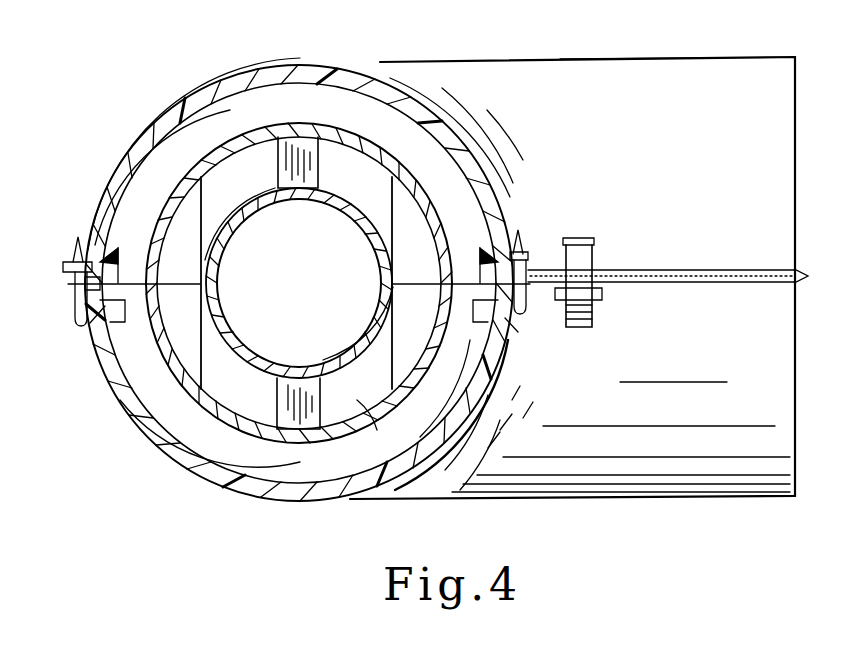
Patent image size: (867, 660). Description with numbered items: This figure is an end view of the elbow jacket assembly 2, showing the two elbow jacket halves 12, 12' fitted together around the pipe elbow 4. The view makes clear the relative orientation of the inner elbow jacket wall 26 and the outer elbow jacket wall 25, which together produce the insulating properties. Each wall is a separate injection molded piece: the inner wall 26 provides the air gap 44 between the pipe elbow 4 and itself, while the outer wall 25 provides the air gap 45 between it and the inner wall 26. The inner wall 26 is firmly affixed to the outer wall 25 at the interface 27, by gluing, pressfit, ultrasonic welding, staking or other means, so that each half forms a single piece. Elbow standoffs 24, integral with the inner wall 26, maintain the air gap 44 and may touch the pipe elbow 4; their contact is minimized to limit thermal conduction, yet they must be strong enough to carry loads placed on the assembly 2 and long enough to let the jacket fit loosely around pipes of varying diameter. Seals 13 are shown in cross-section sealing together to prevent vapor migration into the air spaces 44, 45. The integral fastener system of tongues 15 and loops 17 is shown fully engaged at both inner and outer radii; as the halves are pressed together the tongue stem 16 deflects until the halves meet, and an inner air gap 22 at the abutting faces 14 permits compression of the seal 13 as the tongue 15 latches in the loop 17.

The elbow jacket assembly 2 is at (798, 60).
The pipe elbow 4 is at (323, 197).
The elbow jacket half 12 is at (640, 37).
The elbow jacket half 12' is at (621, 459).
The seal 13 is at (808, 276).
The abutting face 14 is at (115, 277).
The tongue 15 is at (72, 240).
The tongue stem 16 is at (75, 303).
The loop 17 is at (68, 268).
The inner air gap 22 is at (125, 290).
The elbow standoff 24 is at (282, 158).
The outer elbow jacket wall 25 is at (297, 64).
The inner elbow jacket wall 26 is at (260, 125).
The interface 27 is at (90, 323).
The air gap 44 is at (363, 440).
The air gap 45 is at (155, 168).